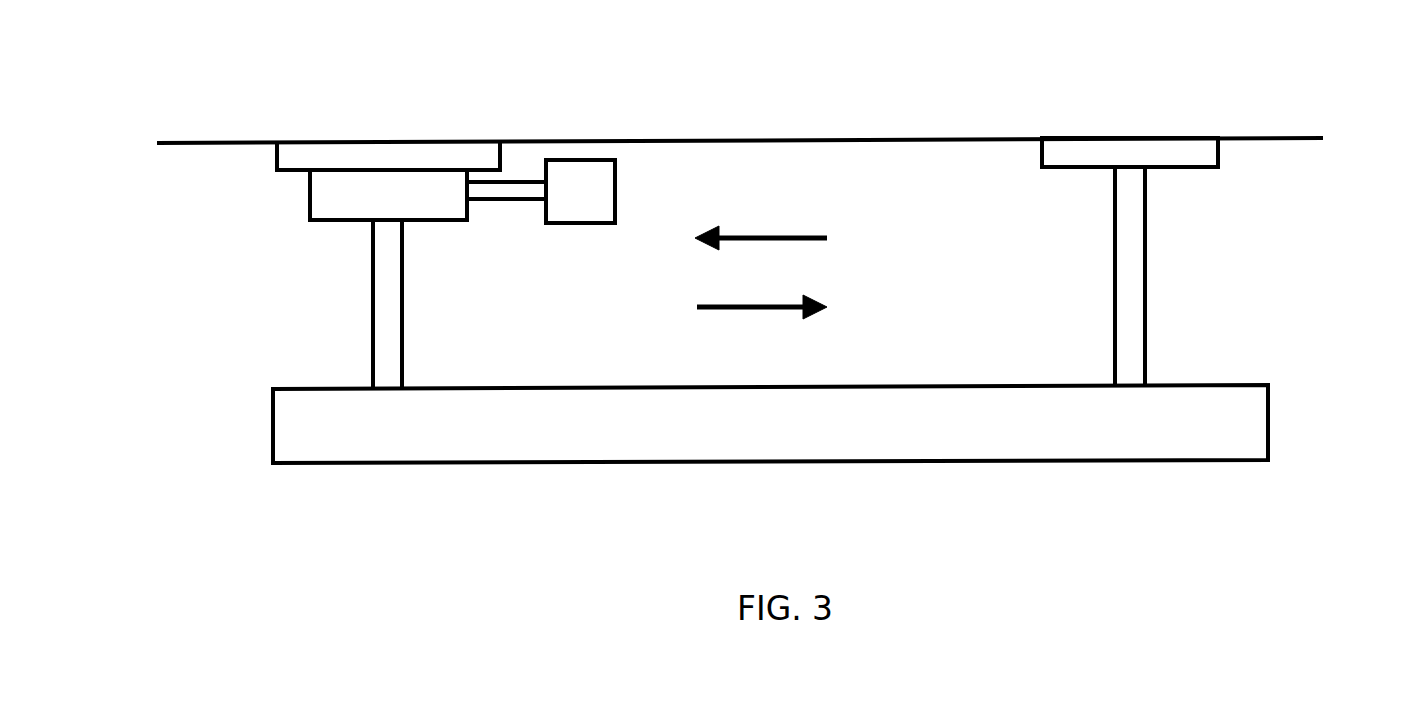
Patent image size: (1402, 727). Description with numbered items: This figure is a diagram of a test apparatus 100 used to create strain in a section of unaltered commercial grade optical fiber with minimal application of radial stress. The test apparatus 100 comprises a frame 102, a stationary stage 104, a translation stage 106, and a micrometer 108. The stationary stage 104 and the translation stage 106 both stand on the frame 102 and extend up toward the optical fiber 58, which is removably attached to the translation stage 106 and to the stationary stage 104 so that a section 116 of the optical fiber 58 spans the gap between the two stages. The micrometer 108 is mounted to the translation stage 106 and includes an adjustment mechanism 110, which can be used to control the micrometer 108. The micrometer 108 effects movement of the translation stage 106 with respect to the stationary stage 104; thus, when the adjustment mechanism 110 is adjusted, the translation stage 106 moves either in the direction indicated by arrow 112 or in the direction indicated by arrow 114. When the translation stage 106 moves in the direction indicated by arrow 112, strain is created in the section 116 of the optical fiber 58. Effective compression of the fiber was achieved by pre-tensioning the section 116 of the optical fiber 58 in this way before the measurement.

The optical fiber 58 is at (1253, 138).
The test apparatus 100 is at (211, 337).
The frame 102 is at (1268, 425).
The stationary stage 104 is at (1145, 280).
The translation stage 106 is at (370, 322).
The micrometer 108 is at (440, 224).
The adjustment mechanism 110 is at (557, 223).
The arrow 112 is at (758, 235).
The arrow 114 is at (780, 307).
The section 116 is at (762, 140).